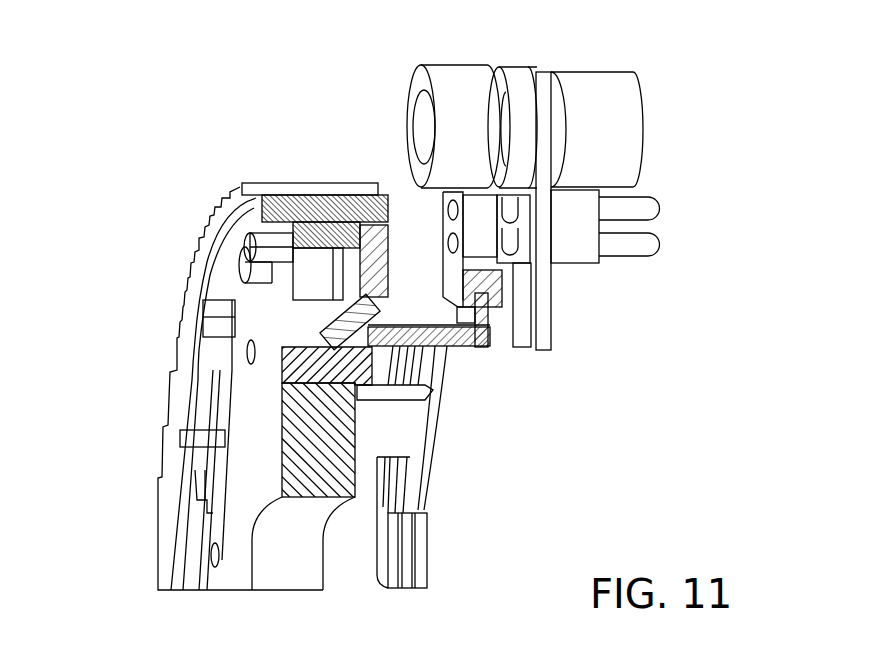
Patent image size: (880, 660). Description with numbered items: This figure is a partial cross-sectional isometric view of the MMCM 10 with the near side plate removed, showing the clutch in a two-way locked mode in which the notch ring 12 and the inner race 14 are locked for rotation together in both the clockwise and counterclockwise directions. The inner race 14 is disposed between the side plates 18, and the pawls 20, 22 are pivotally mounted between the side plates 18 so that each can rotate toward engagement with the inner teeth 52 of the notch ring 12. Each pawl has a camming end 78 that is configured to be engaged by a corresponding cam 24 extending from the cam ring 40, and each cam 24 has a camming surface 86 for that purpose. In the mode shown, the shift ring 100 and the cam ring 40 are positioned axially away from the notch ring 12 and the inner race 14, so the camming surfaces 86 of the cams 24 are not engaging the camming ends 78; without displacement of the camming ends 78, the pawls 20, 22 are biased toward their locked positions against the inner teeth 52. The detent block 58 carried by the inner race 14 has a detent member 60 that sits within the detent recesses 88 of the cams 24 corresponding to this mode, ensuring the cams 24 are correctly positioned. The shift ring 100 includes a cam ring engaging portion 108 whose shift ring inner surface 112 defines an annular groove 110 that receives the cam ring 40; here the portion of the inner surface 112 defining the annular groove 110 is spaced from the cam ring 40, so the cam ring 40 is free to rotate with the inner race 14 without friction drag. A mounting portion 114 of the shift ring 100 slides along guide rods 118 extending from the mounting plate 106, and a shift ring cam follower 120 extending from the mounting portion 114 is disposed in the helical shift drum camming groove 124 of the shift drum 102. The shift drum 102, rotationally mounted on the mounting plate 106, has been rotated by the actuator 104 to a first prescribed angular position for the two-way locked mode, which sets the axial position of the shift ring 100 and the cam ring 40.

The MMCM 10 is at (128, 80).
The notch ring 12 is at (238, 197).
The inner race 14 is at (273, 573).
The side plates 18 is at (378, 262).
The first pawls 20 is at (205, 317).
The second pawls 22 is at (240, 258).
The cams 24 is at (490, 343).
The cam ring 40 is at (427, 505).
The inner teeth 52 is at (200, 435).
The detent block 58 is at (290, 375).
The detent member 60 is at (352, 383).
The camming end 78 is at (313, 287).
The camming surface 86 is at (325, 325).
The detent recesses 88 is at (388, 345).
The shift ring 100 is at (427, 548).
The shift drum 102 is at (452, 77).
The actuator 104 is at (615, 83).
The mounting plate 106 is at (542, 307).
The cam ring engaging portion 108 is at (481, 550).
The annular groove 110 is at (397, 490).
The shift ring inner surface 112 is at (313, 504).
The mounting portion 114 is at (452, 228).
The guide rods 118 is at (647, 247).
The shift ring cam follower 120 is at (437, 178).
The shift drum camming groove 124 is at (495, 88).